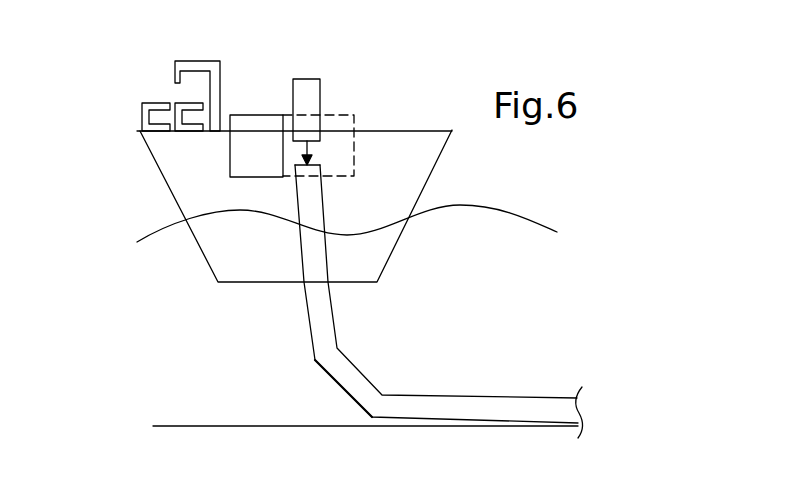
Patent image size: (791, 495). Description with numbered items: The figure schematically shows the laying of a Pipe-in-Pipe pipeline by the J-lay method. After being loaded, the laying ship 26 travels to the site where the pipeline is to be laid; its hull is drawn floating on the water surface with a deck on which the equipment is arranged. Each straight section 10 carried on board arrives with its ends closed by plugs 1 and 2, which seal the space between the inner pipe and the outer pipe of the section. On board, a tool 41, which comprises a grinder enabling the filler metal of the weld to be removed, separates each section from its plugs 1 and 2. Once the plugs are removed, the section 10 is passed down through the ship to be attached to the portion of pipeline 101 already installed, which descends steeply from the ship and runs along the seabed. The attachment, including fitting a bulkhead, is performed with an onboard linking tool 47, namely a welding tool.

The plug 1 is at (144, 103).
The plug 2 is at (182, 131).
The straight section 10 is at (318, 110).
The laying ship 26 is at (415, 185).
The tool 41 is at (208, 58).
The linking tool 47 is at (256, 146).
The portion of pipeline 101 is at (467, 400).